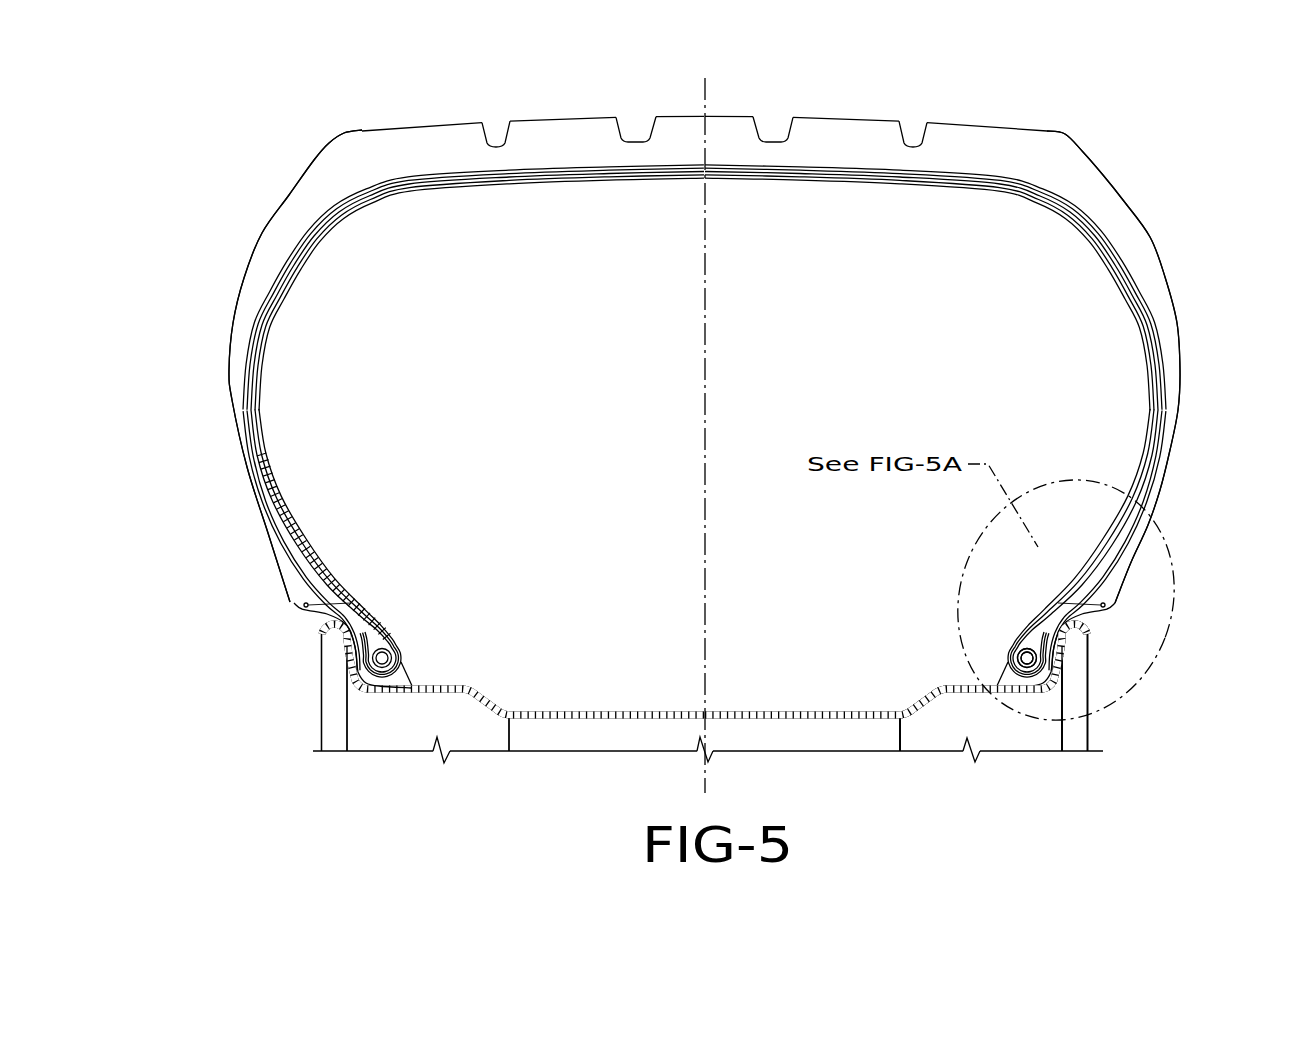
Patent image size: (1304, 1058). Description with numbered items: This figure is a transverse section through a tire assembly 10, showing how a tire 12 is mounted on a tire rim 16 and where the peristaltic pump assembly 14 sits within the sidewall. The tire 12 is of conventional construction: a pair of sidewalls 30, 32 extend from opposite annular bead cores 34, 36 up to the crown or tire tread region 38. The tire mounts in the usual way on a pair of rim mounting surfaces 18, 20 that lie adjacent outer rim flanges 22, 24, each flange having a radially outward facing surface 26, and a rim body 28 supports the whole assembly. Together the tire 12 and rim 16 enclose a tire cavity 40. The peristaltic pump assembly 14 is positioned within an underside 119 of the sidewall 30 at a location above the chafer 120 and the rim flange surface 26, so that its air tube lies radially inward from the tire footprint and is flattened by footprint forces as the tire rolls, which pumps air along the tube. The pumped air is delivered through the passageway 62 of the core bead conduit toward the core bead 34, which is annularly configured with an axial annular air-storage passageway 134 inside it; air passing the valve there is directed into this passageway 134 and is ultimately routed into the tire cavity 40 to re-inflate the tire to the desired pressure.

The tire assembly 10 is at (218, 190).
The tire 12 is at (1090, 152).
The peristaltic pump assembly 14 is at (1107, 610).
The tire rim 16 is at (805, 720).
The rim mounting surface 18 is at (1018, 692).
The rim mounting surface 20 is at (390, 693).
The rim flange 22 is at (1078, 630).
The rim flange 24 is at (350, 658).
The radially outward facing surface 26 is at (1063, 632).
The rim body 28 is at (538, 718).
The sidewall 30 is at (1148, 235).
The sidewall 32 is at (263, 290).
The core bead 34 is at (1015, 653).
The bead core 36 is at (393, 650).
The tire tread region 38 is at (530, 115).
The tire cavity 40 is at (858, 652).
The passageway of the core bead conduit 62 is at (1090, 597).
The sidewall underside 119 is at (1105, 605).
The chafer 120 is at (1112, 590).
The axial annular air-storage passageway 134 is at (1028, 664).